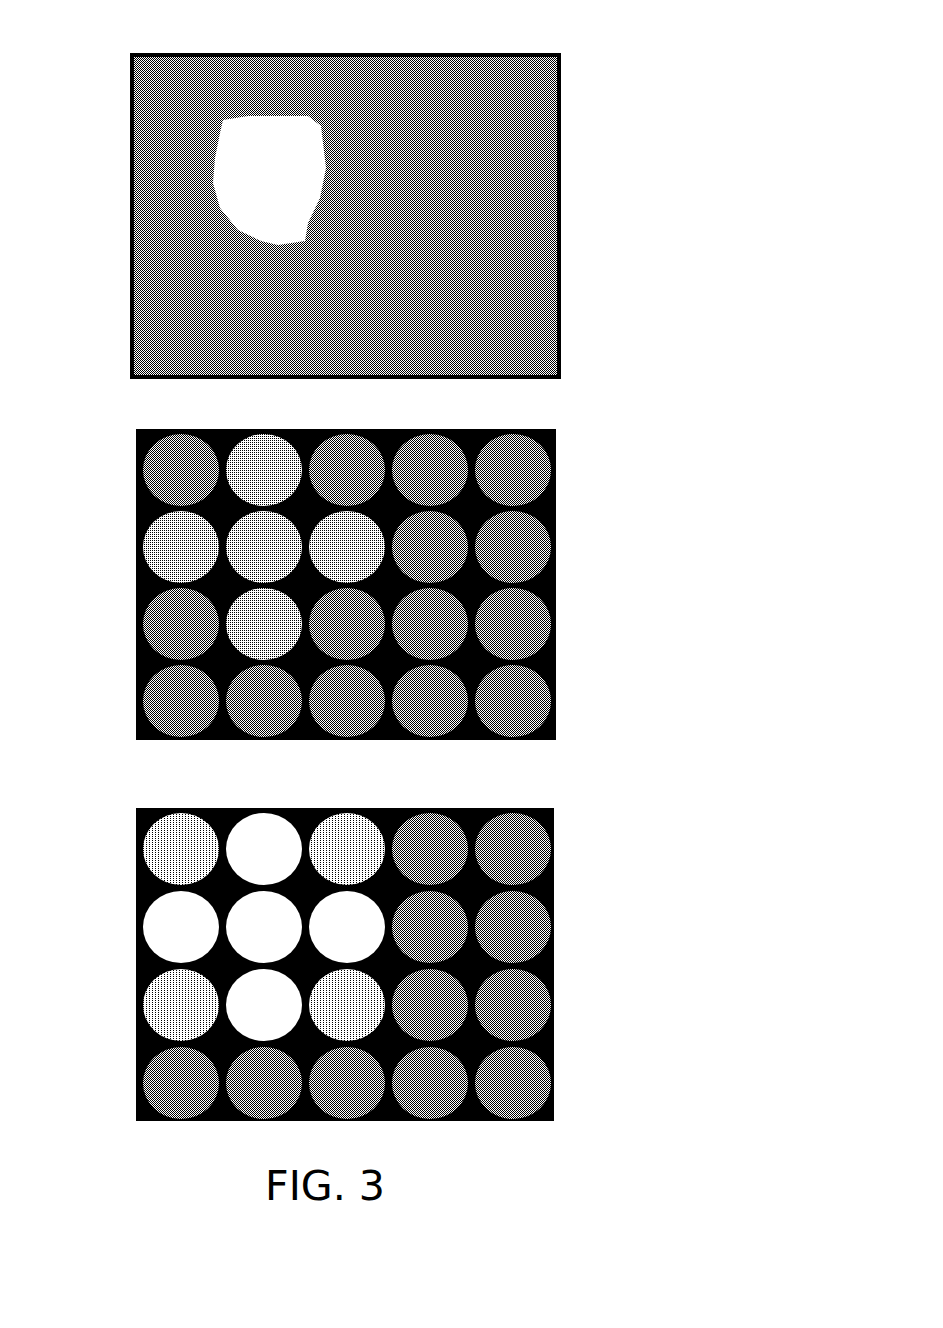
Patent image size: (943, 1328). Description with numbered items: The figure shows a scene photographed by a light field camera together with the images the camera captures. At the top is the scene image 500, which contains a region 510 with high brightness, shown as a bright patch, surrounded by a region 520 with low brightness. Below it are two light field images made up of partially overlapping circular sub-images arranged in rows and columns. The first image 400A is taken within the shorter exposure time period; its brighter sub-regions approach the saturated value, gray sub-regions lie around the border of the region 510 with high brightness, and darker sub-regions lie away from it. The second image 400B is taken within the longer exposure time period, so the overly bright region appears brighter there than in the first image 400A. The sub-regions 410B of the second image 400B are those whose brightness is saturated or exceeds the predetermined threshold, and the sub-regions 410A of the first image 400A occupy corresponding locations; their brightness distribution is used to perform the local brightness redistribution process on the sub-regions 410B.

The scene image 500 is at (327, 197).
The region with high brightness 510 is at (245, 167).
The region with low brightness 520 is at (481, 90).
The first image 400A is at (329, 580).
The second image 400B is at (328, 962).
The sub-regions of the first image 410A is at (250, 543).
The sub-regions of the second image 410B is at (250, 922).